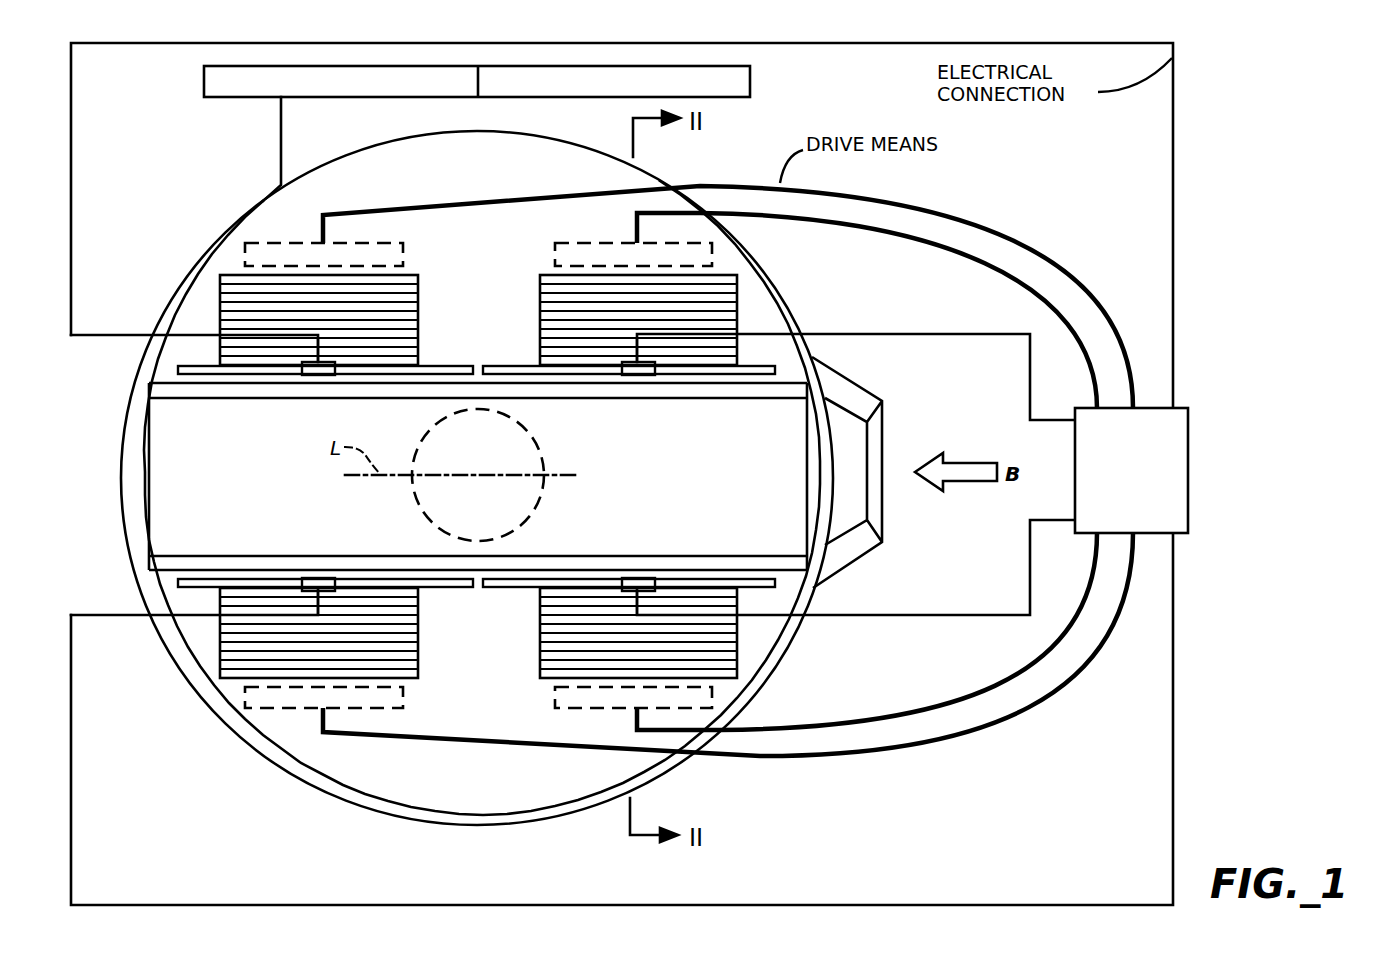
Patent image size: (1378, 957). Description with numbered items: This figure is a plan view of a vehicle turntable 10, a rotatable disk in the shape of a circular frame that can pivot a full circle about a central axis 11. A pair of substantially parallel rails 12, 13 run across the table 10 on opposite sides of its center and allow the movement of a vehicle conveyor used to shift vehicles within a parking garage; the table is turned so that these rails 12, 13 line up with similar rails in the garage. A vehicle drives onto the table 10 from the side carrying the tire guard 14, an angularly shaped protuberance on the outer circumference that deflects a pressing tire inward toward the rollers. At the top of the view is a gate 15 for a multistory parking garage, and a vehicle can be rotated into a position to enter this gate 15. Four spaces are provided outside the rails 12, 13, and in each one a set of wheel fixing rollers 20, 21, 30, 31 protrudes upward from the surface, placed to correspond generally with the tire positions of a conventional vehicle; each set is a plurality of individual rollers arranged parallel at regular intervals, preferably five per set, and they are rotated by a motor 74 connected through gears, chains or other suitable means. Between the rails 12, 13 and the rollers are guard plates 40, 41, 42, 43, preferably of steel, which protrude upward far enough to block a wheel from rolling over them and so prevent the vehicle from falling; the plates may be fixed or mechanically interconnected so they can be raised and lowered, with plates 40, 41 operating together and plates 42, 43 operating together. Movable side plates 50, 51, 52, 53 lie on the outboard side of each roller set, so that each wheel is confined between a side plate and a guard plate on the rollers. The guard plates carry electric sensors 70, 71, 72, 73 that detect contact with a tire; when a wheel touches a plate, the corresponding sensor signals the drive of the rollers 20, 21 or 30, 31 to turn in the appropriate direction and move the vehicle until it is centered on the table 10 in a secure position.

The turntable 10 is at (667, 180).
The axis 11 is at (543, 452).
The rail 12 is at (740, 555).
The rail 13 is at (737, 390).
The tire guard 14 is at (860, 438).
The gate 15 is at (733, 80).
The wheel fixing rollers 20 is at (760, 648).
The wheel fixing rollers 21 is at (760, 305).
The wheel fixing rollers 30 is at (200, 648).
The wheel fixing rollers 31 is at (200, 305).
The guard plate 40 is at (773, 586).
The guard plate 41 is at (773, 368).
The guard plate 42 is at (180, 586).
The guard plate 43 is at (180, 367).
The movable side plate 50 is at (675, 708).
The movable side plate 51 is at (675, 246).
The movable side plate 52 is at (300, 710).
The movable side plate 53 is at (300, 250).
The electric sensor 70 is at (637, 577).
The electric sensor 71 is at (637, 376).
The electric sensor 72 is at (322, 577).
The electric sensor 73 is at (322, 376).
The motor 74 is at (1188, 432).